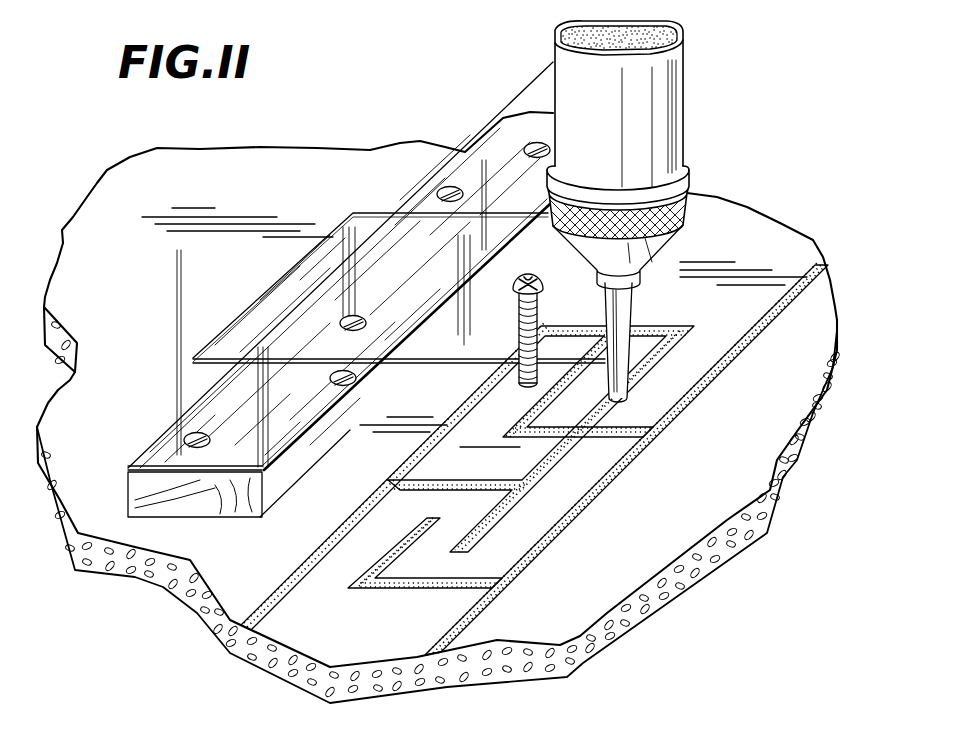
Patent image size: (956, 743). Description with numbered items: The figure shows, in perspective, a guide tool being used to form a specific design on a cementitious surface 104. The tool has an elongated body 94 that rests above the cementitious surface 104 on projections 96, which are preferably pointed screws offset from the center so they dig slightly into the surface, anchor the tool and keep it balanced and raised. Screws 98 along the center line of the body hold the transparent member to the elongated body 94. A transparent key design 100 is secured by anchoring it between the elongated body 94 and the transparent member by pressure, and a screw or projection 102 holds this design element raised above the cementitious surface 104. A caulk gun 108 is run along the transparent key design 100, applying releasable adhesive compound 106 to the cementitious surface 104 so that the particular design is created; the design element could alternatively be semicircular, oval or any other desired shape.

The elongated body 94 is at (270, 490).
The projections 96 is at (197, 435).
The screws 98 is at (350, 320).
The key design 100 is at (458, 363).
The screw or projection 102 is at (520, 383).
The cementitious surface 104 is at (705, 503).
The releasable adhesive compound 106 is at (660, 367).
The caulk gun 108 is at (688, 128).